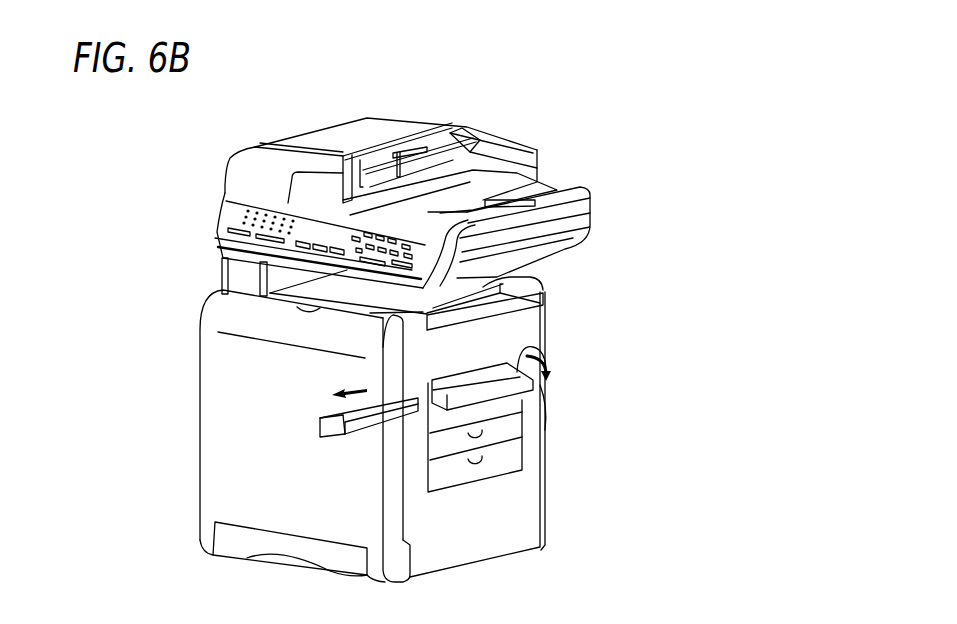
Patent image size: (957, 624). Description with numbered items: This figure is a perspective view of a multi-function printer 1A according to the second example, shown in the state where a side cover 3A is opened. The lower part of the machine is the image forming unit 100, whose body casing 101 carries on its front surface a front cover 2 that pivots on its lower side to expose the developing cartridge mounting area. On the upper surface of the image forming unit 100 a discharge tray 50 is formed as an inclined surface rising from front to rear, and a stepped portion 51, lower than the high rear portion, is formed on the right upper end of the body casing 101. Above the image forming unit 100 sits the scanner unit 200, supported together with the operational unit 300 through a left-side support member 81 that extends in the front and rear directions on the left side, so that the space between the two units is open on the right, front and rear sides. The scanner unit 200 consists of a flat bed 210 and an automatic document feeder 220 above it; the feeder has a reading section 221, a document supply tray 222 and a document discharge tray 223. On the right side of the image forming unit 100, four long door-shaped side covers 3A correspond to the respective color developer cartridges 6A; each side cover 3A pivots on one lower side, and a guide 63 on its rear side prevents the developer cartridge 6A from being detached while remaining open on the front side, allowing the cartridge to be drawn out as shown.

The multi-function printer 1A is at (672, 85).
The front cover 2 is at (220, 423).
The side cover 3A is at (510, 407).
The developer cartridge 6A is at (338, 437).
The discharge tray 50 is at (510, 278).
The stepped portion 51 is at (510, 297).
The guide 63 is at (530, 347).
The left-side support member 81 is at (237, 270).
The image forming unit 100 is at (575, 324).
The body casing 101 is at (558, 388).
The scanner unit 200 is at (550, 120).
The flat bed 210 is at (587, 217).
The automatic document feeder 220 is at (413, 110).
The reading section 221 is at (335, 137).
The document supply tray 222 is at (477, 142).
The document discharge tray 223 is at (483, 198).
The operational unit 300 is at (222, 205).